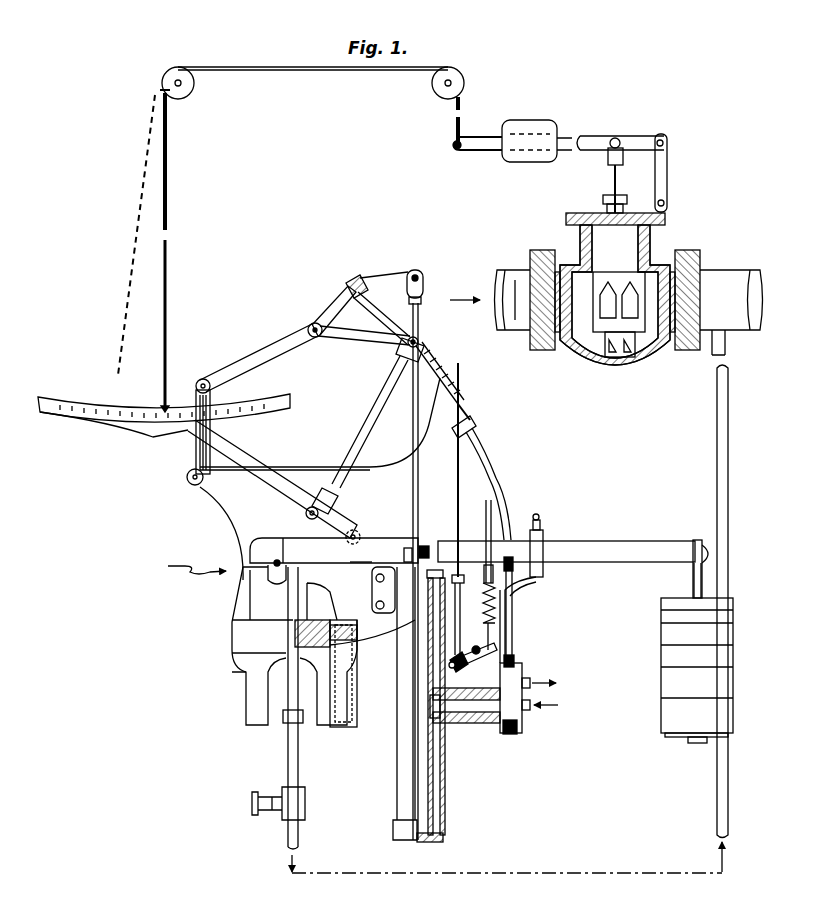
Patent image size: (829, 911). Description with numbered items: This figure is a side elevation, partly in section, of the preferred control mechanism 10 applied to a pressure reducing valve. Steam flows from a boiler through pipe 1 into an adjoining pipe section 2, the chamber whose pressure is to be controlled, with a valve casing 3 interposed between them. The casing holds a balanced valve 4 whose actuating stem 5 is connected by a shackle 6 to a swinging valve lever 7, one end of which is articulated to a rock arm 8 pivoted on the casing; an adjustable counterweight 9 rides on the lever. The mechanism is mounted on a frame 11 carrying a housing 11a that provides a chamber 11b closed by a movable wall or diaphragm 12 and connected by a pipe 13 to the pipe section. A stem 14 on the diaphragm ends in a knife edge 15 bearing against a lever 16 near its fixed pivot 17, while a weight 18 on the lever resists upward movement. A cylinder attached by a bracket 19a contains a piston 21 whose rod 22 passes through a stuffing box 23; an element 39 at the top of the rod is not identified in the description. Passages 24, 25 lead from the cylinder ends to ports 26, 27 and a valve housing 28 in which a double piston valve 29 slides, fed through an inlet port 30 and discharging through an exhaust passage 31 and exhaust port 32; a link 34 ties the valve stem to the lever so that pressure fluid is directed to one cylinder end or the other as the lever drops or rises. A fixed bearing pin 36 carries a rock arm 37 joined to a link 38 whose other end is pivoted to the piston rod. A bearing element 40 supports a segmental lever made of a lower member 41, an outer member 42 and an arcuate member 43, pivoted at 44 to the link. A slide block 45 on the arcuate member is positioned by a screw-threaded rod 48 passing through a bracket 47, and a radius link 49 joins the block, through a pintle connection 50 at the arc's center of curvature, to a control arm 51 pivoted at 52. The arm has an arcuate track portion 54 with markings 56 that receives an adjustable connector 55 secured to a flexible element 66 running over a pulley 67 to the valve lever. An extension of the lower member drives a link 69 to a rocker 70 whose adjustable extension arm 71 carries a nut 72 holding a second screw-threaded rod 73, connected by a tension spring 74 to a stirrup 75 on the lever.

The pipe 1 is at (505, 278).
The pipe section 2 is at (740, 280).
The valve casing 3 is at (640, 358).
The valve 4 is at (610, 345).
The actuating stem 5 is at (612, 178).
The shackle 6 is at (607, 156).
The valve lever 7 is at (600, 136).
The rock arm 8 is at (668, 169).
The adjustable counterweight 9 is at (518, 122).
The control mechanism 10 is at (187, 576).
The frame 11 is at (500, 495).
The housing 11a is at (240, 640).
The chamber 11b is at (356, 664).
The movable wall 12 is at (332, 622).
The pipe 13 is at (288, 752).
The stem 14 is at (330, 588).
The knife edge 15 is at (300, 563).
The lever 16 is at (372, 538).
The fixed pivot 17 is at (268, 563).
The weight 18 is at (660, 630).
The bracket 19a is at (385, 566).
The piston 21 is at (418, 623).
The piston rod 22 is at (418, 464).
The stuffing box 23 is at (425, 548).
The passage 24 is at (458, 600).
The passage 25 is at (440, 783).
The port 26 is at (462, 576).
The port 27 is at (445, 836).
The valve housing 28 is at (525, 712).
The double piston valve 29 is at (513, 656).
The inlet port 30 is at (533, 694).
The exhaust passage 31 is at (512, 735).
The exhaust port 32 is at (527, 672).
The link 34 is at (513, 612).
The bearing pin 36 is at (187, 480).
The rock arm 37 is at (198, 384).
The link 38 is at (268, 352).
The pin 39 is at (420, 276).
The bearing element 40 is at (460, 382).
The lower member 41 is at (383, 362).
The outer member 42 is at (342, 308).
The arcuate member 43 is at (360, 286).
The pivotal connection 44 is at (310, 325).
The slide block 45 is at (422, 346).
The bracket 47 is at (475, 425).
The screw-threaded rod 48 is at (492, 452).
The radius link 49 is at (358, 452).
The pintle connection 50 is at (340, 505).
The control arm 51 is at (225, 453).
The pivot 52 is at (355, 530).
The track portion 54 is at (108, 432).
The connector 55 is at (164, 404).
The markings 56 is at (65, 396).
The flexible element 66 is at (140, 200).
The pulley 67 is at (192, 92).
The link 69 is at (440, 92).
The rocker 70 is at (476, 650).
The extension arm 71 is at (460, 668).
The nut 72 is at (493, 656).
The screw-threaded rod 73 is at (517, 622).
The tension spring 74 is at (483, 605).
The stirrup 75 is at (487, 530).